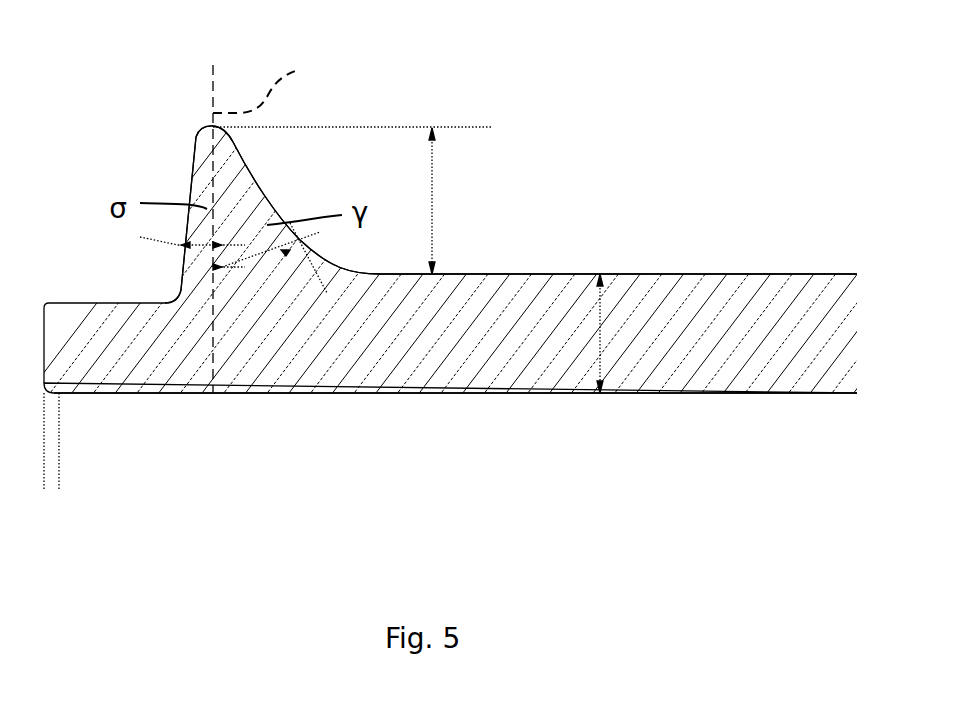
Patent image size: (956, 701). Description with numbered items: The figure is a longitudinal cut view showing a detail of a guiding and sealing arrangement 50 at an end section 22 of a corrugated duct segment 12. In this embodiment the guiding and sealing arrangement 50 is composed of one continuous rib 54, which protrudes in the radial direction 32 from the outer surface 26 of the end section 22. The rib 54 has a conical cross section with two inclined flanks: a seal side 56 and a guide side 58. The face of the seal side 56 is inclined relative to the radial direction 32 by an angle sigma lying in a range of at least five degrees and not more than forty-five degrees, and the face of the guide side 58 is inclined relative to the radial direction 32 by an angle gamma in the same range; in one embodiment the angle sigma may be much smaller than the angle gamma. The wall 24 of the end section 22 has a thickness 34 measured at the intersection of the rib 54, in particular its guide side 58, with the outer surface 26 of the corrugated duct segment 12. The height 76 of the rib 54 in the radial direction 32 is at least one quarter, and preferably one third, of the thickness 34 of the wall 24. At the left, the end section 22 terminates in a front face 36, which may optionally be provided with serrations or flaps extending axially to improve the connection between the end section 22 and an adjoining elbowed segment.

The corrugated duct segment 12 is at (762, 275).
The end section 22 is at (255, 424).
The wall 24 is at (469, 363).
The outer surface 26 is at (530, 274).
The radial direction 32 is at (283, 85).
The thickness 34 is at (598, 330).
The front face 36 is at (43, 337).
The guiding and sealing arrangement 50 is at (311, 198).
The rib 54 is at (197, 136).
The seal side 56 is at (192, 186).
The guide side 58 is at (253, 173).
The height 76 is at (432, 218).